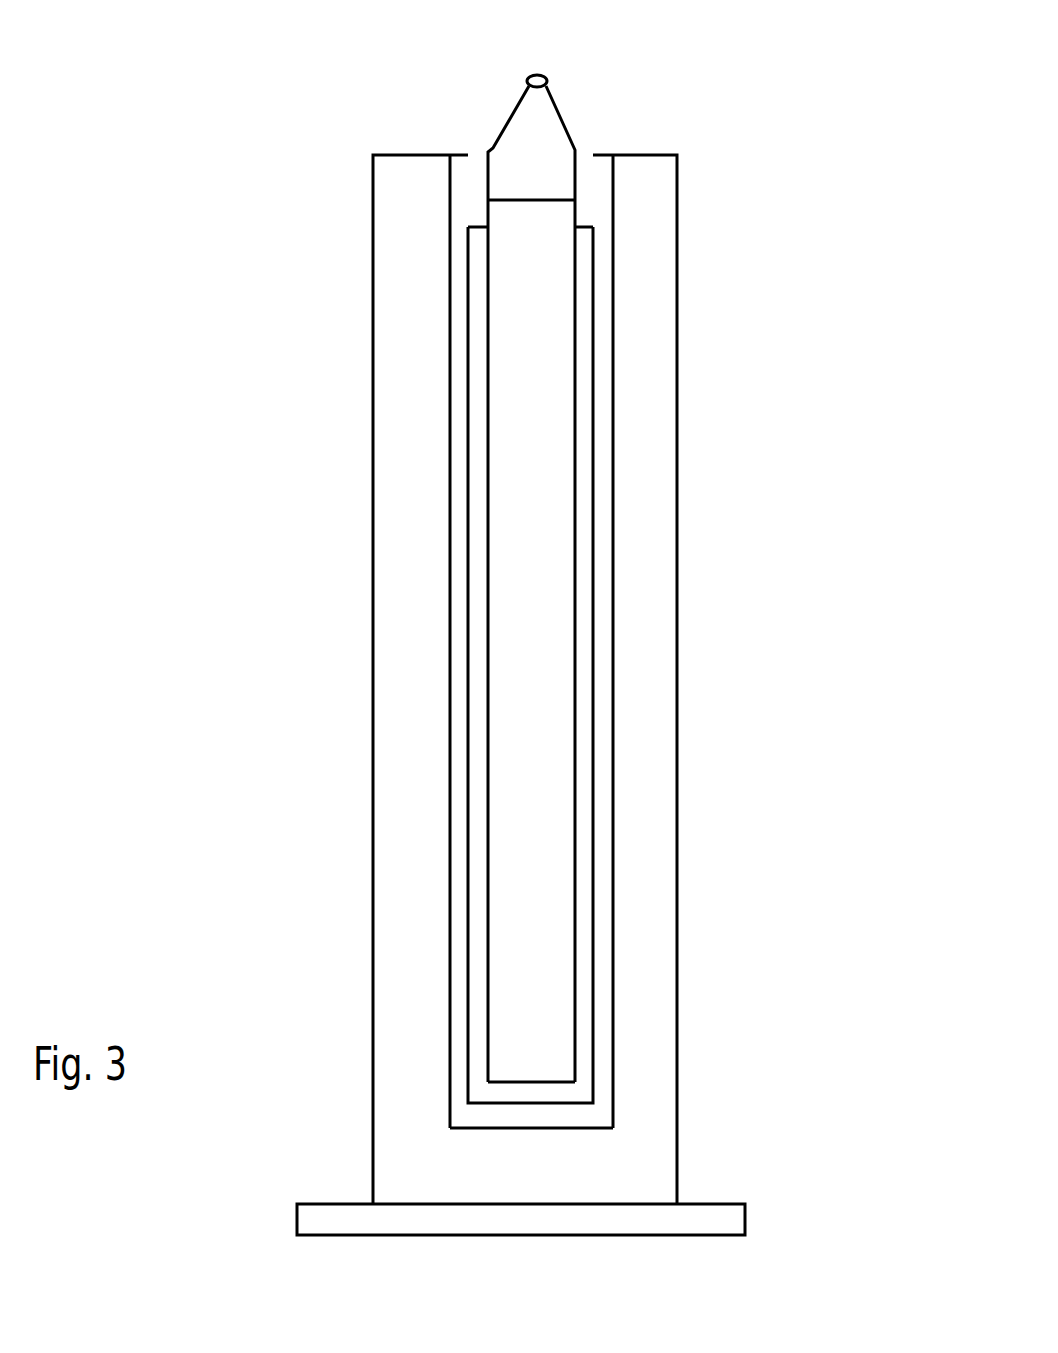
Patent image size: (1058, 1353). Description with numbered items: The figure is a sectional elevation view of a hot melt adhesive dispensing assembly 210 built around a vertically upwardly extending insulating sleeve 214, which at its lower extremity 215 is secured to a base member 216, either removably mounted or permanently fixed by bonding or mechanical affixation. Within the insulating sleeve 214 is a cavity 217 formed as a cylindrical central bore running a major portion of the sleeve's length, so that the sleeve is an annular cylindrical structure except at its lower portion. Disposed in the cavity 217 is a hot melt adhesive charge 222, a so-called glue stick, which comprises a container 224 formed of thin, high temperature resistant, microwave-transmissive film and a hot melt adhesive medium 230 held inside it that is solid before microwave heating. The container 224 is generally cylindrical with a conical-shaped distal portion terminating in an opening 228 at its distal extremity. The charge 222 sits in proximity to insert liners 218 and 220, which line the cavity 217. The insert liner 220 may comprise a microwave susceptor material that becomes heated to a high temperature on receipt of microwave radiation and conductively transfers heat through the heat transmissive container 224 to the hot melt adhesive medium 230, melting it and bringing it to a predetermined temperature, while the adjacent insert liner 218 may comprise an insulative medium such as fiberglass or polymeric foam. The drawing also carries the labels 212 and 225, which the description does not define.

The hot melt adhesive dispensing assembly 210 is at (764, 138).
The first side wall 212 is at (390, 215).
The insulating sleeve 214 is at (667, 862).
The lower extremity of insulating sleeve 215 is at (638, 1195).
The base member 216 is at (745, 1223).
The cavity 217 is at (580, 1116).
The insert liner 218 is at (595, 352).
The insert liner 220 is at (577, 480).
The hot melt adhesive charge 222 is at (558, 552).
The container 224 is at (553, 1022).
The tip 225 is at (523, 127).
The opening 228 is at (535, 76).
The hot melt adhesive medium 230 is at (532, 187).